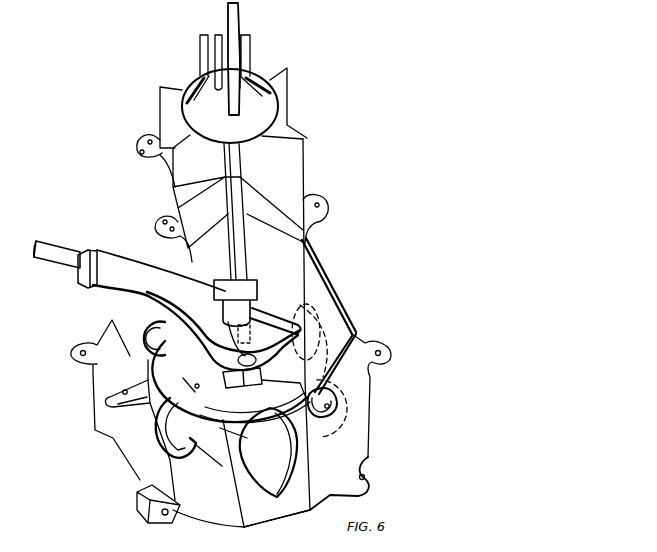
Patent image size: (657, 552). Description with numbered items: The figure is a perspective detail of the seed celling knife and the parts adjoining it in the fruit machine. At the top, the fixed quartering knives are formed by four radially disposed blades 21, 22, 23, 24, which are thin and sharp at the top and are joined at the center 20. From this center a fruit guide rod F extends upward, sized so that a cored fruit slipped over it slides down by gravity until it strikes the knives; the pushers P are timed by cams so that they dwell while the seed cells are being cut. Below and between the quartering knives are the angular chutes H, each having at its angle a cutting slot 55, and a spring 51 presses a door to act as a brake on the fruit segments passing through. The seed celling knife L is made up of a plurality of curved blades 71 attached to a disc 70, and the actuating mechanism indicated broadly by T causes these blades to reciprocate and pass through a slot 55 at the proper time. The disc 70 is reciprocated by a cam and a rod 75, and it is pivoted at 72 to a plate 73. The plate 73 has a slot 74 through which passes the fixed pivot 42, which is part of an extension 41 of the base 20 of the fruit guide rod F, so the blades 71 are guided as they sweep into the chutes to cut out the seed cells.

The fruit guide rod F is at (246, 14).
The pushers P is at (250, 53).
The blade 23 is at (283, 87).
The blade 24 is at (167, 103).
The center 20 is at (235, 156).
The blade 21 is at (182, 198).
The blade 22 is at (284, 324).
The extension 41 is at (257, 283).
The plate 73 is at (325, 330).
The actuating mechanism T is at (167, 314).
The rod 75 is at (57, 246).
The curved blade 71 is at (137, 320).
The slot 74 is at (300, 326).
The fixed pivot 42 is at (286, 332).
The disc 70 is at (180, 370).
The seed celling knife L is at (183, 378).
The pivot 72 is at (315, 377).
The cutting slot 55 is at (277, 445).
The angular chute H is at (298, 478).
The spring 51 is at (299, 493).